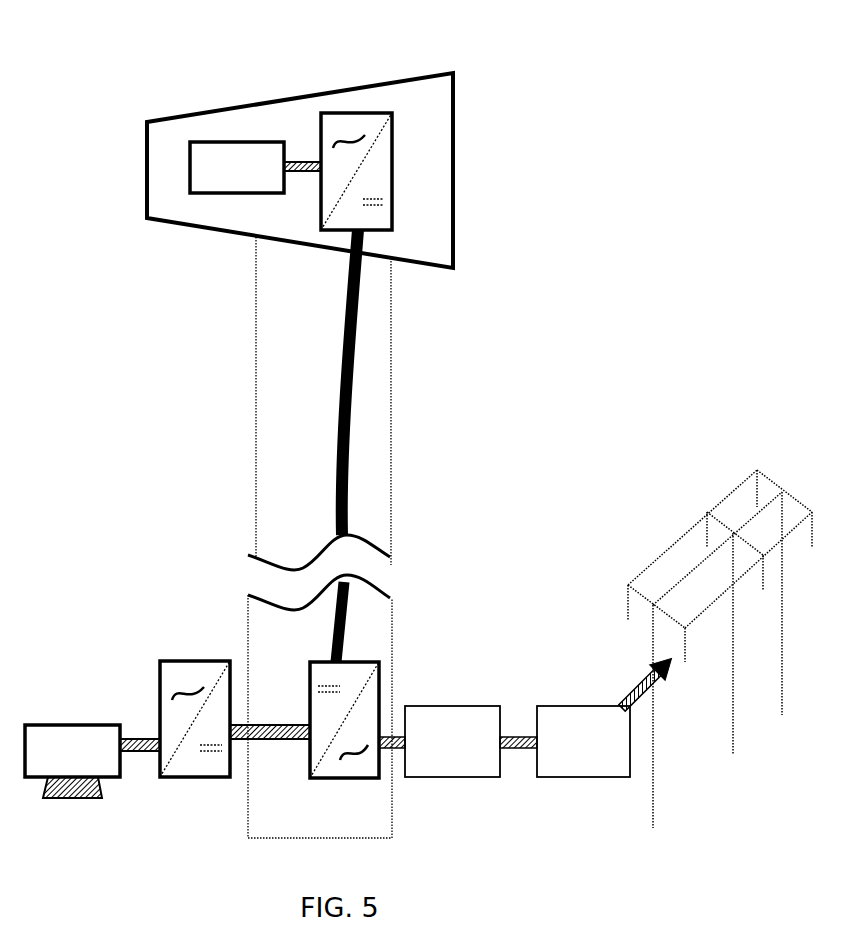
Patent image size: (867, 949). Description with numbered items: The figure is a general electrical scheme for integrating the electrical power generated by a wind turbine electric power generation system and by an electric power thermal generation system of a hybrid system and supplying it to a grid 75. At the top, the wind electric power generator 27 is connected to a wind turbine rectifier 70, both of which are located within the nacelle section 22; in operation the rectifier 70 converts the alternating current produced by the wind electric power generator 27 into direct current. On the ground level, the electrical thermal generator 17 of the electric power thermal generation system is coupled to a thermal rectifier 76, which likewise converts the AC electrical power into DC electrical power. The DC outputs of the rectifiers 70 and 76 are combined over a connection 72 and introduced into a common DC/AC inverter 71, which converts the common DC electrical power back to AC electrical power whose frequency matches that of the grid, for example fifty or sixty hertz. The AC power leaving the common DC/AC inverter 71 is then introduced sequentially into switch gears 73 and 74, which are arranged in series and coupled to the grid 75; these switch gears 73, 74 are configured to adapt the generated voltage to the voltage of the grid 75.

The electrical thermal generator 17 is at (78, 723).
The nacelle section 22 is at (275, 110).
The wind electric power generator 27 is at (202, 138).
The wind turbine rectifier 70 is at (352, 117).
The common DC/AC inverter 71 is at (362, 662).
The electrical connection 72 is at (280, 740).
The switch gear 73 is at (418, 708).
The switch gear 74 is at (550, 708).
The grid 75 is at (697, 535).
The thermal rectifier 76 is at (200, 664).